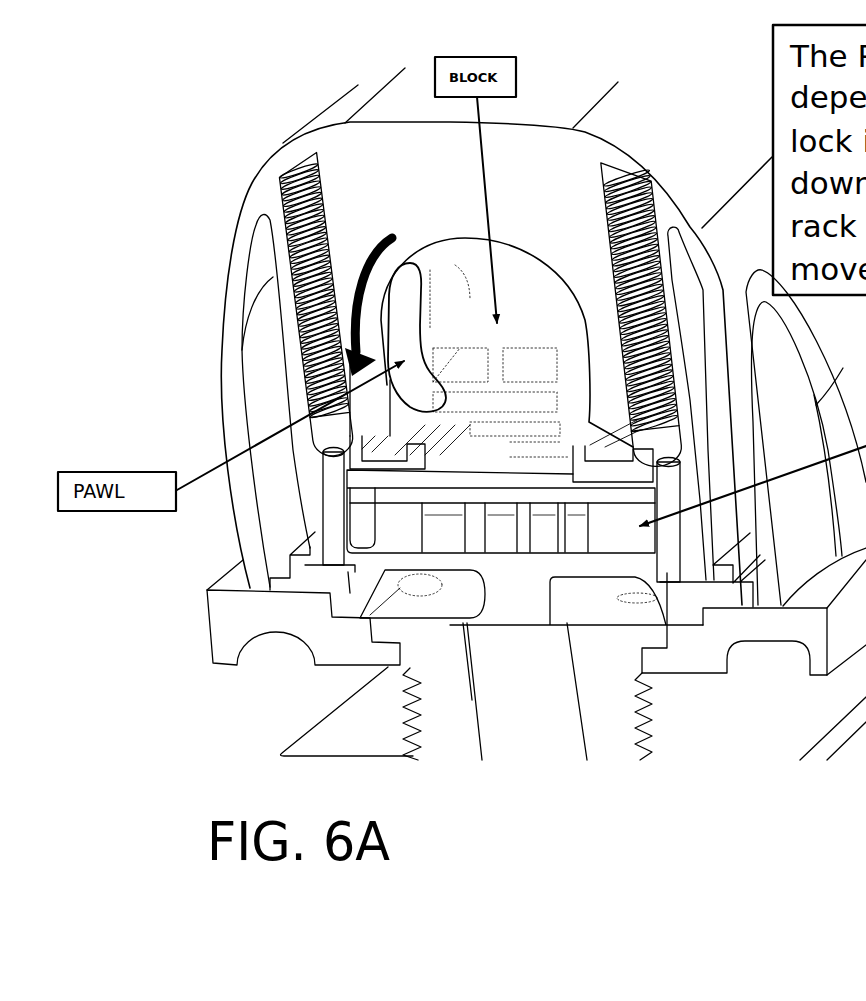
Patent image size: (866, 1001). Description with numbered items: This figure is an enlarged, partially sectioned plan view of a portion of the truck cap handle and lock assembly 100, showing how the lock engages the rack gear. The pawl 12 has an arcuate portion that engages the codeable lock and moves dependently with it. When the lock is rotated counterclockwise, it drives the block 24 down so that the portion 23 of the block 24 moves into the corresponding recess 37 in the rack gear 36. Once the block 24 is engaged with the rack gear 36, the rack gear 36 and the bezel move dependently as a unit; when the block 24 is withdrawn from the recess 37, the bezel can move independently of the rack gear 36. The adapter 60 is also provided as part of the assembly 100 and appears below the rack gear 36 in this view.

The truck cap handle and lock assembly 100 is at (199, 287).
The pawl 12 is at (418, 284).
The block 24 is at (510, 340).
The portion of the block 23 is at (521, 443).
The rack gear 36 is at (448, 480).
The recess 37 is at (510, 453).
The adapter 60 is at (617, 710).